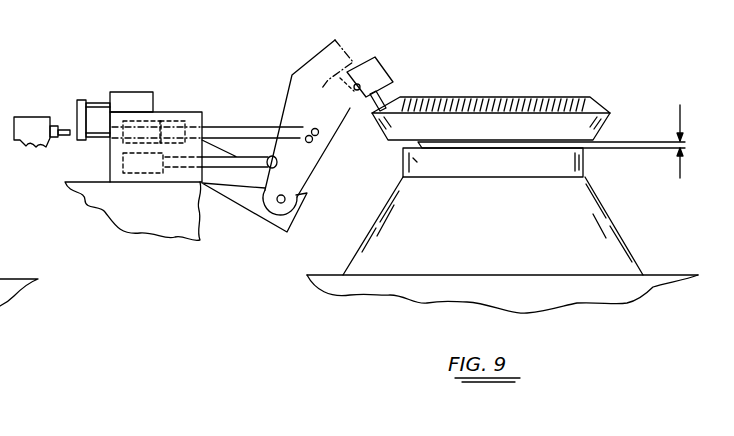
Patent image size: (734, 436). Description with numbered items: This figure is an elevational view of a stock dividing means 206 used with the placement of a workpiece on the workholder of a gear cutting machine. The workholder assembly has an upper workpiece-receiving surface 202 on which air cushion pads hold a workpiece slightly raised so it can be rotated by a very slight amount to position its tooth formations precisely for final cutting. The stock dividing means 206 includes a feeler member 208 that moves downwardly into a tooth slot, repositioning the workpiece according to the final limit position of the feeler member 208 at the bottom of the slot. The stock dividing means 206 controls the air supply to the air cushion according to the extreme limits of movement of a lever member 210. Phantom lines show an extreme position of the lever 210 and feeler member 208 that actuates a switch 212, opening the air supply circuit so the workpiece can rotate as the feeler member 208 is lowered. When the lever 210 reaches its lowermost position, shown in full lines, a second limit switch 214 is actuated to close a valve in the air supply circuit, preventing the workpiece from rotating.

The upper workpiece-receiving surface 202 is at (604, 146).
The stock dividing means 206 is at (180, 110).
The feeler member 208 is at (392, 92).
The lever member 210 is at (380, 62).
The switch 212 is at (52, 90).
The second limit switch 214 is at (127, 103).